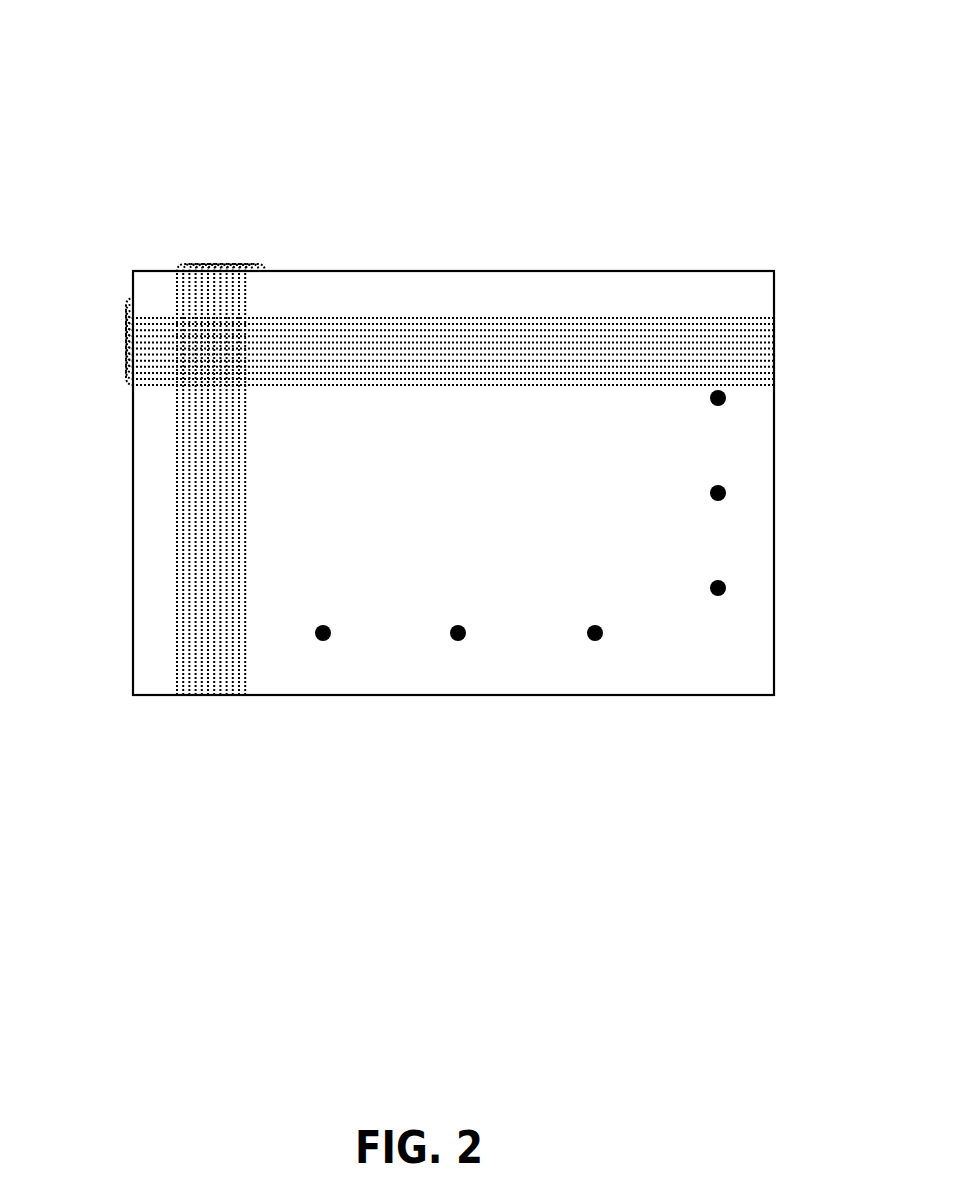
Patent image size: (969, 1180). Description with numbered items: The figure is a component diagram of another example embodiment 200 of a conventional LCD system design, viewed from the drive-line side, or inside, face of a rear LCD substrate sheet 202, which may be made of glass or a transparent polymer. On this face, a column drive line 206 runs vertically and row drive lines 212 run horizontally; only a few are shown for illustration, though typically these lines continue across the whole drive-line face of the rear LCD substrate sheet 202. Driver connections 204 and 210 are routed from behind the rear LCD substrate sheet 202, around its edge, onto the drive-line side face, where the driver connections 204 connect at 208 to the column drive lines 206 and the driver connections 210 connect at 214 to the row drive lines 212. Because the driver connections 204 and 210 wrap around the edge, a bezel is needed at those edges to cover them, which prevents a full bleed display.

The example embodiment of conventional LCD system design 200 is at (149, 66).
The rear LCD substrate sheet 202 is at (490, 271).
The driver connections 204 is at (263, 260).
The column drive lines 206 is at (247, 700).
The connection 208 is at (258, 289).
The driver connections 210 is at (120, 302).
The row drive lines 212 is at (780, 318).
The connection 214 is at (146, 401).